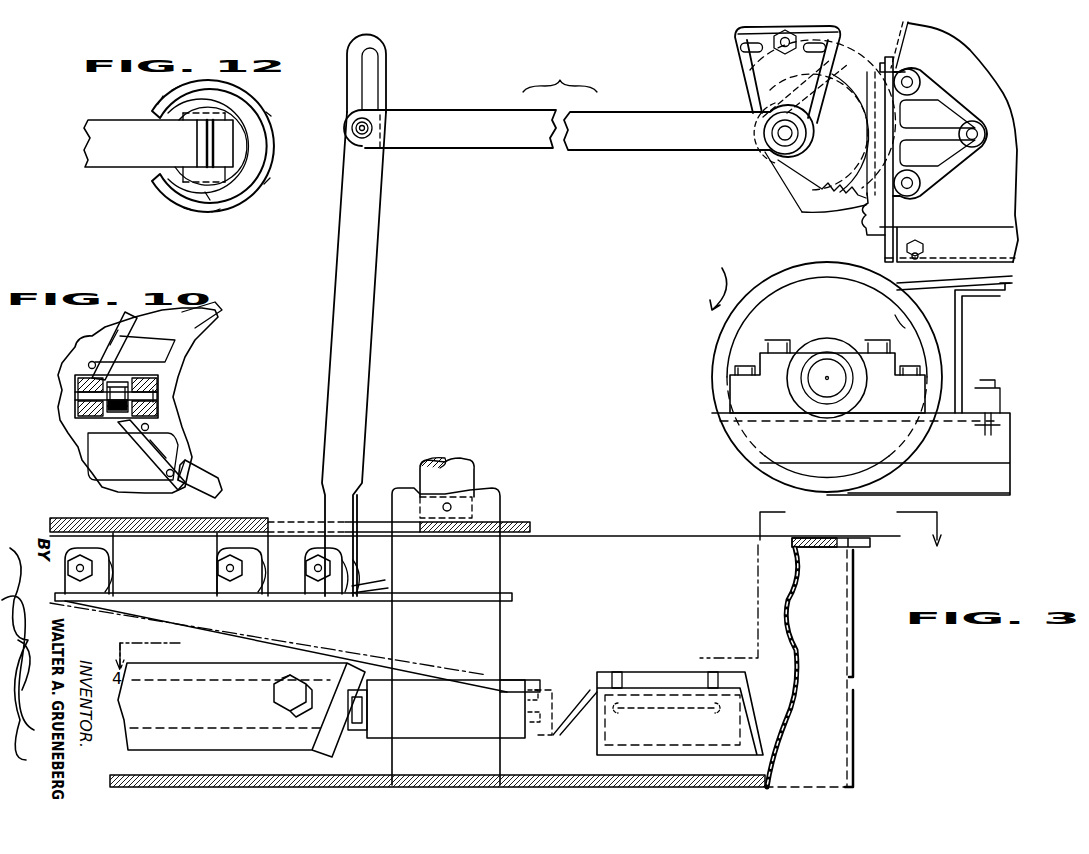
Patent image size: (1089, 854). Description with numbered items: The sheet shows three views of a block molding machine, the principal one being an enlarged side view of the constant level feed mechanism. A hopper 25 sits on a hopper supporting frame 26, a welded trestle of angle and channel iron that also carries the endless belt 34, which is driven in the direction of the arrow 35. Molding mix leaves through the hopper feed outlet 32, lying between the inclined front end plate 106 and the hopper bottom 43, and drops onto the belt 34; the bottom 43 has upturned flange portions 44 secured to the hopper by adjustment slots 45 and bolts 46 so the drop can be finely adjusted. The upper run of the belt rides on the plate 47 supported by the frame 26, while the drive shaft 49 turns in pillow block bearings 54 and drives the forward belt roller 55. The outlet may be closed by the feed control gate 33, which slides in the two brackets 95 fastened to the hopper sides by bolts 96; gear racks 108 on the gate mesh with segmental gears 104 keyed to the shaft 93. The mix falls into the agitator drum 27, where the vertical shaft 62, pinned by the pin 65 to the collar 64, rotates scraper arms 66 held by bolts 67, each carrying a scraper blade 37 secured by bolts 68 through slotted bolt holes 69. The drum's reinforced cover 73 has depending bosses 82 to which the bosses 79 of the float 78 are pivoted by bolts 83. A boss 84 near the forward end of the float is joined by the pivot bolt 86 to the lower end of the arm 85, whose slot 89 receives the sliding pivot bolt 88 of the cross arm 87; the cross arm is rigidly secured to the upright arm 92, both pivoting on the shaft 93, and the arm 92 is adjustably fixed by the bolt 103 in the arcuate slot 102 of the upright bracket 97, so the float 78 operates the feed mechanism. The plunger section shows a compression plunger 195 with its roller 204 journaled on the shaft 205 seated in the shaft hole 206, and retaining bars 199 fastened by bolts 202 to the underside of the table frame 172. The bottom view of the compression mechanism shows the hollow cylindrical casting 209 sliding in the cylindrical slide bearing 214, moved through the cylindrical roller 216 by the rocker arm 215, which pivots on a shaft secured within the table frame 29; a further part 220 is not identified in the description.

In FIG. 3, the hopper 25 is at (1002, 157).
In FIG. 3, the hopper supporting frame 26 is at (1002, 452).
In FIG. 3, the agitator drum 27 is at (660, 560).
In FIG. 3, the hopper feed outlet 32 is at (884, 240).
In FIG. 3, the feed control gate 33 is at (885, 62).
In FIG. 3, the endless belt 34 is at (712, 350).
In FIG. 3, the arrow 35 is at (708, 283).
In FIG. 3, the scraper blades 37 is at (225, 748).
In FIG. 3, the hopper bottom 43 is at (1018, 262).
In FIG. 3, the upturned flange portions 44 is at (1000, 240).
In FIG. 3, the adjustment slots 45 is at (923, 246).
In FIG. 3, the bolts 46 is at (919, 256).
In FIG. 3, the plate 47 is at (985, 292).
In FIG. 3, the drive shaft 49 is at (830, 386).
In FIG. 3, the pillow block bearings 54 is at (817, 338).
In FIG. 3, the forward belt roller 55 is at (905, 322).
In FIG. 3, the vertical shaft 62 is at (470, 474).
In FIG. 3, the collar 64 is at (505, 512).
In FIG. 3, the pin 65 is at (447, 507).
In FIG. 3, the scraper arms 66 is at (360, 735).
In FIG. 3, the bolts 67 is at (372, 705).
In FIG. 3, the bolts 68 is at (272, 697).
In FIG. 3, the slotted bolt holes 69 is at (290, 676).
In FIG. 10, the reinforced cover 73 is at (194, 508).
In FIG. 3, the reinforced cover 73 is at (530, 527).
In FIG. 3, the float 78 is at (505, 603).
In FIG. 3, the bosses 79 is at (109, 585).
In FIG. 3, the depending bosses 82 is at (218, 553).
In FIG. 3, the bolts 83 is at (68, 568).
In FIG. 3, the boss 84 is at (388, 584).
In FIG. 3, the arm 85 is at (360, 318).
In FIG. 3, the pivot bolt 86 is at (315, 556).
In FIG. 3, the cross arm 87 is at (484, 132).
In FIG. 3, the sliding pivot bolt 88 is at (370, 138).
In FIG. 3, the slot 89 is at (366, 92).
In FIG. 3, the upright arm 92 is at (770, 80).
In FIG. 3, the shaft 93 is at (779, 150).
In FIG. 3, the brackets 95 is at (935, 180).
In FIG. 3, the bolts 96 is at (921, 82).
In FIG. 3, the upright bracket 97 is at (745, 62).
In FIG. 3, the arcuate slot 102 is at (748, 46).
In FIG. 3, the bolt 103 is at (797, 38).
In FIG. 3, the segmental gears 104 is at (810, 197).
In FIG. 3, the inclined front end plate 106 is at (891, 41).
In FIG. 3, the gear racks 108 is at (862, 226).
In FIG. 10, the table frame 172 is at (172, 367).
In FIG. 10, the compression plunger 195 is at (158, 412).
In FIG. 10, the retaining bars 199 is at (112, 344).
In FIG. 10, the bolts 202 is at (86, 358).
In FIG. 10, the roller 204 is at (117, 405).
In FIG. 10, the shaft 205 is at (150, 396).
In FIG. 10, the shaft hole 206 is at (78, 397).
In FIG. 12, the table frame 29 is at (270, 161).
In FIG. 12, the hollow cylindrical casting 209 is at (250, 150).
In FIG. 12, the cylindrical slide bearing 214 is at (248, 108).
In FIG. 12, the rocker arm 215 is at (112, 152).
In FIG. 12, the cylindrical roller 216 is at (212, 197).
In FIG. 12, the bracket 220 is at (192, 144).